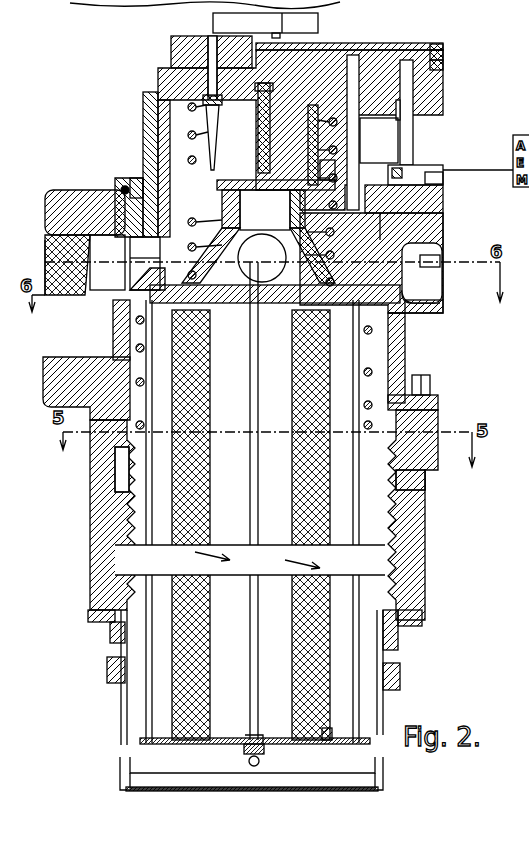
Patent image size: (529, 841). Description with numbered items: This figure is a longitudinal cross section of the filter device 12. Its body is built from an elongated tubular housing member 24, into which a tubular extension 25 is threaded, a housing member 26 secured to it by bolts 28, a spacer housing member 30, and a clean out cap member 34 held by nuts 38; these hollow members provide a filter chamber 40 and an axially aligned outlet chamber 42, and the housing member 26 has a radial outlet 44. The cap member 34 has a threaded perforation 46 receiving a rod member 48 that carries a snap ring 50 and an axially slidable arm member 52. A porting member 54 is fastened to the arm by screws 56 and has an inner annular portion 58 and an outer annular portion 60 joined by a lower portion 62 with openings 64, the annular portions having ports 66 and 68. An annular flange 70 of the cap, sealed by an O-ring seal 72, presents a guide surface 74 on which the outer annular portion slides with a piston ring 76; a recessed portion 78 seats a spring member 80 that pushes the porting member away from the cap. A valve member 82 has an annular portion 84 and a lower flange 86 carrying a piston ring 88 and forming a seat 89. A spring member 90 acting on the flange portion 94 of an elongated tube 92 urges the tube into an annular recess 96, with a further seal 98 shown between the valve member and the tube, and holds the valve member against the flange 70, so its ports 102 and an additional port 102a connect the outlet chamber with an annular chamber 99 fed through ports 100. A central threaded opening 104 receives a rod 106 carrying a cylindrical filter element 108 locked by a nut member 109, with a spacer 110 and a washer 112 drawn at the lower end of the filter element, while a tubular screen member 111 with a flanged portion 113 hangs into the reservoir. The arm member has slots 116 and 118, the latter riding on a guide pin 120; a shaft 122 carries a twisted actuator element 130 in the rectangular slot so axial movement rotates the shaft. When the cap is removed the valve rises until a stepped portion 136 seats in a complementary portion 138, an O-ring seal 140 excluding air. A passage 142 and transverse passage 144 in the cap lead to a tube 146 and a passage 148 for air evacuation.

The filter device 12 is at (437, 527).
The tubular housing member 24 is at (423, 616).
The tubular extension 25 is at (402, 680).
The housing member 26 is at (406, 351).
The bolts 28 is at (431, 383).
The spacer housing member 30 is at (436, 132).
The cap member 34 is at (398, 40).
The nuts 38 is at (213, 22).
The filter chamber 40 is at (378, 586).
The outlet chamber 42 is at (441, 209).
The outlet 44 is at (45, 292).
The threaded perforation 46 is at (165, 80).
The rod member 48 is at (150, 100).
The snap ring 50 is at (264, 198).
The arm member 52 is at (318, 150).
The porting member 54 is at (470, 256).
The screws 56 is at (215, 165).
The inner annular portion 58 is at (322, 190).
The outer annular portion 60 is at (150, 190).
The lower portion 62 is at (432, 280).
The openings 64 is at (416, 318).
The ports 66 is at (306, 236).
The ports 68 is at (441, 195).
The annular flange 70 is at (415, 115).
The O-ring seal 72 is at (405, 168).
The guide surface 74 is at (413, 100).
The piston ring 76 is at (160, 190).
The recessed portion 78 is at (352, 56).
The spring member 80 is at (188, 107).
The valve member 82 is at (412, 218).
The annular portion 84 is at (122, 188).
The flange 86 is at (412, 298).
The piston ring 88 is at (441, 311).
The seat 89 is at (405, 326).
The spring member 90 is at (439, 406).
The tube 92 is at (374, 375).
The flange portion 94 is at (140, 332).
The annular recess 96 is at (163, 335).
The spring 98 is at (143, 521).
The annular chamber 99 is at (422, 262).
The ports 100 is at (85, 205).
The ports 102 is at (268, 240).
The valve seat 102a is at (226, 250).
The central threaded opening 104 is at (292, 521).
The rod 106 is at (250, 366).
The filter element 108 is at (255, 748).
The nut member 109 is at (270, 742).
The spacer 110 is at (318, 742).
The tubular screen member 111 is at (402, 491).
The washer 112 is at (240, 738).
The flanged portion 113 is at (100, 460).
The slot 116 is at (214, 234).
The slot 118 is at (332, 168).
The guide pin 120 is at (350, 120).
The shaft 122 is at (171, 58).
The actuator element 130 is at (164, 130).
The stepped portion 136 is at (158, 285).
The complementarily formed portion 138 is at (162, 250).
The O-ring seal 140 is at (162, 262).
The passage 142 is at (441, 53).
The transverse passage 144 is at (438, 44).
The tube 146 is at (441, 67).
The passage 148 is at (440, 172).